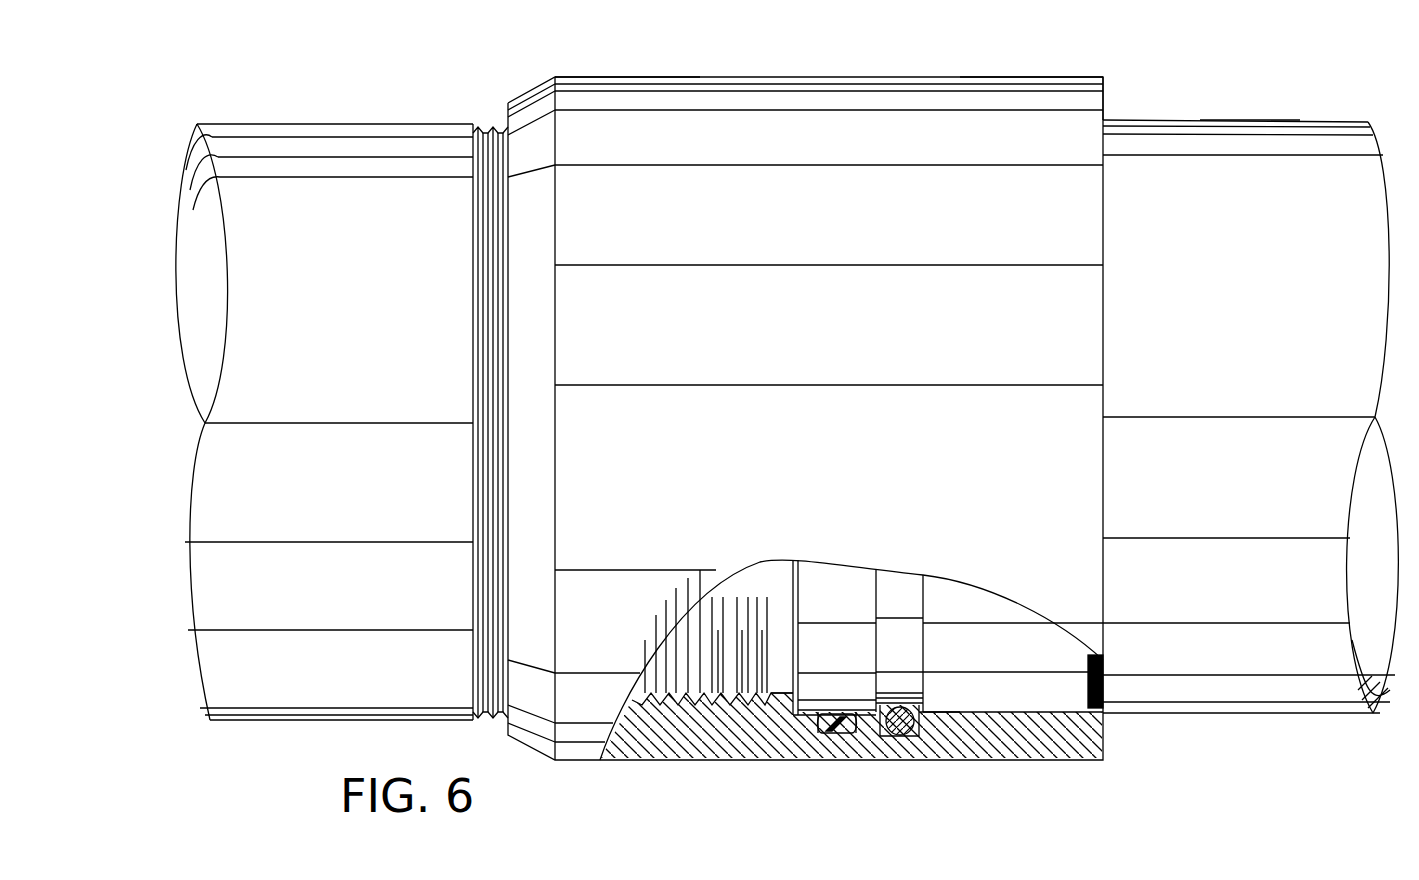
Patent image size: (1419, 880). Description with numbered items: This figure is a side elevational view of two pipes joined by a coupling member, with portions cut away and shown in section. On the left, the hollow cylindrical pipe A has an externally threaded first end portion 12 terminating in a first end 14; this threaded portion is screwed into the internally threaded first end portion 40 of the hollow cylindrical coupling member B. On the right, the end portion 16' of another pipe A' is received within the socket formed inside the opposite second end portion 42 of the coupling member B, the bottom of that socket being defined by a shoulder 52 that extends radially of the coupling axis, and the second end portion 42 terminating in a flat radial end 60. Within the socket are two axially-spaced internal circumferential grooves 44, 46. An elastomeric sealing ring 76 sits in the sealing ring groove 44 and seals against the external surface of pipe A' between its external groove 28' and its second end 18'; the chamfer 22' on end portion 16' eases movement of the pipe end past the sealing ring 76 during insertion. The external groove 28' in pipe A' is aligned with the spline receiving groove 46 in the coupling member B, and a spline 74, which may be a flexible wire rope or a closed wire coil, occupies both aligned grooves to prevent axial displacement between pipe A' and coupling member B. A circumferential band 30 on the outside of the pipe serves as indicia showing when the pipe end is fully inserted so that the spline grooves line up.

The pipe A is at (324, 388).
The pipe A' is at (1250, 374).
The coupling member B is at (800, 68).
The externally threaded first end portion 12 is at (479, 124).
The first end 14 is at (712, 590).
The end portion 16' is at (1250, 95).
The pipe second end 18' is at (816, 612).
The chamfer 22' is at (748, 745).
The external groove 28' is at (989, 643).
The circumferential band 30 is at (1105, 668).
The internally threaded first end portion 40 is at (583, 76).
The second end portion 42 is at (985, 76).
The internal circumferential groove 44 is at (828, 742).
The internal circumferential groove 46 is at (890, 745).
The shoulder 52 is at (800, 700).
The flat radial end 60 is at (1105, 100).
The spline 74 is at (950, 755).
The elastomeric sealing ring 76 is at (845, 735).